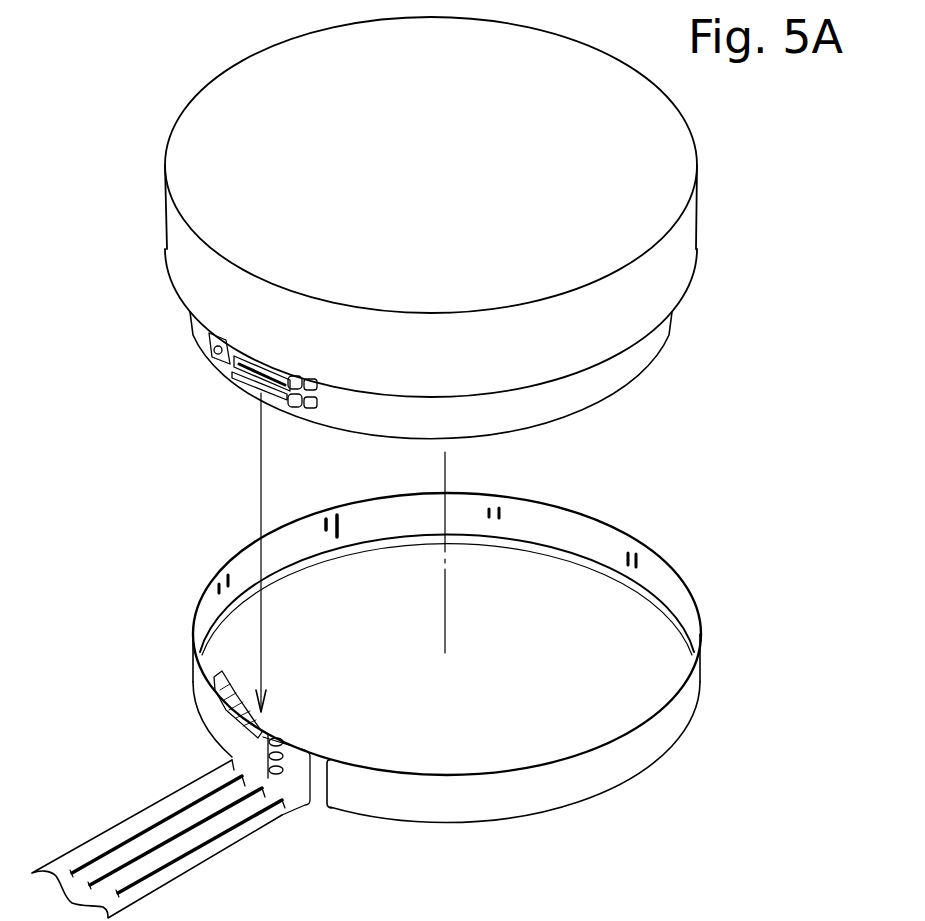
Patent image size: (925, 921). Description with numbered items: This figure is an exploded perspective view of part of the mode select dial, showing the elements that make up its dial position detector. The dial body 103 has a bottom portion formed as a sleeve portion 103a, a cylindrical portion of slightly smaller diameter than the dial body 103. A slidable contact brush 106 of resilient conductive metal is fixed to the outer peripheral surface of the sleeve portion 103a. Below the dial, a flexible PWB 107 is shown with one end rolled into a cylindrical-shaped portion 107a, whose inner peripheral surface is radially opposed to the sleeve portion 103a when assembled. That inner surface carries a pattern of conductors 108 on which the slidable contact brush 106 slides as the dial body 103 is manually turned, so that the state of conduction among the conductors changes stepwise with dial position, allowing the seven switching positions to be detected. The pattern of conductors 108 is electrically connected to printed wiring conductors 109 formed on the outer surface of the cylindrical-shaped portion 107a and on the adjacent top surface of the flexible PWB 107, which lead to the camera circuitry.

The dial body 103 is at (668, 208).
The sleeve portion 103a is at (627, 366).
The slidable contact brush 106 is at (240, 376).
The flexible PWB 107 is at (153, 820).
The cylindrical-shaped portion 107a is at (594, 783).
The pattern of conductors 108 is at (322, 527).
The printed wiring conductors 109 is at (205, 801).